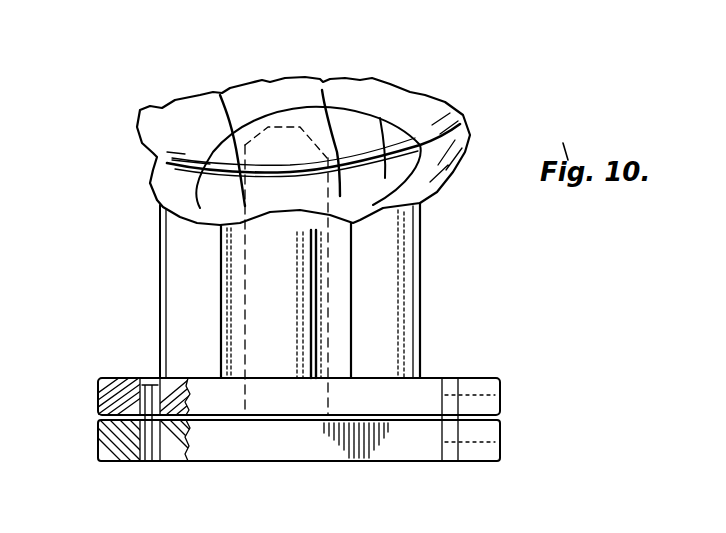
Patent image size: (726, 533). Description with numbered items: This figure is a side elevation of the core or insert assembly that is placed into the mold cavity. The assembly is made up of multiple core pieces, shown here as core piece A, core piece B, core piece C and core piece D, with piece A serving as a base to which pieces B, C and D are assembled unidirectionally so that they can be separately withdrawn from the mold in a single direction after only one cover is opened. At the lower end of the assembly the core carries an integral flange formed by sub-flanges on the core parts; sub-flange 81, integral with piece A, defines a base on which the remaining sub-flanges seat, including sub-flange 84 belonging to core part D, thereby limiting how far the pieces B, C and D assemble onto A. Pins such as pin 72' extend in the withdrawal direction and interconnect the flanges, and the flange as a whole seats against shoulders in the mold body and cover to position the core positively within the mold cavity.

The core piece A is at (273, 84).
The core piece D is at (338, 124).
The core piece C is at (178, 264).
The core piece B is at (420, 253).
The sub-flange 84 is at (381, 388).
The sub-flange 81 is at (224, 440).
The pin 72' is at (314, 408).